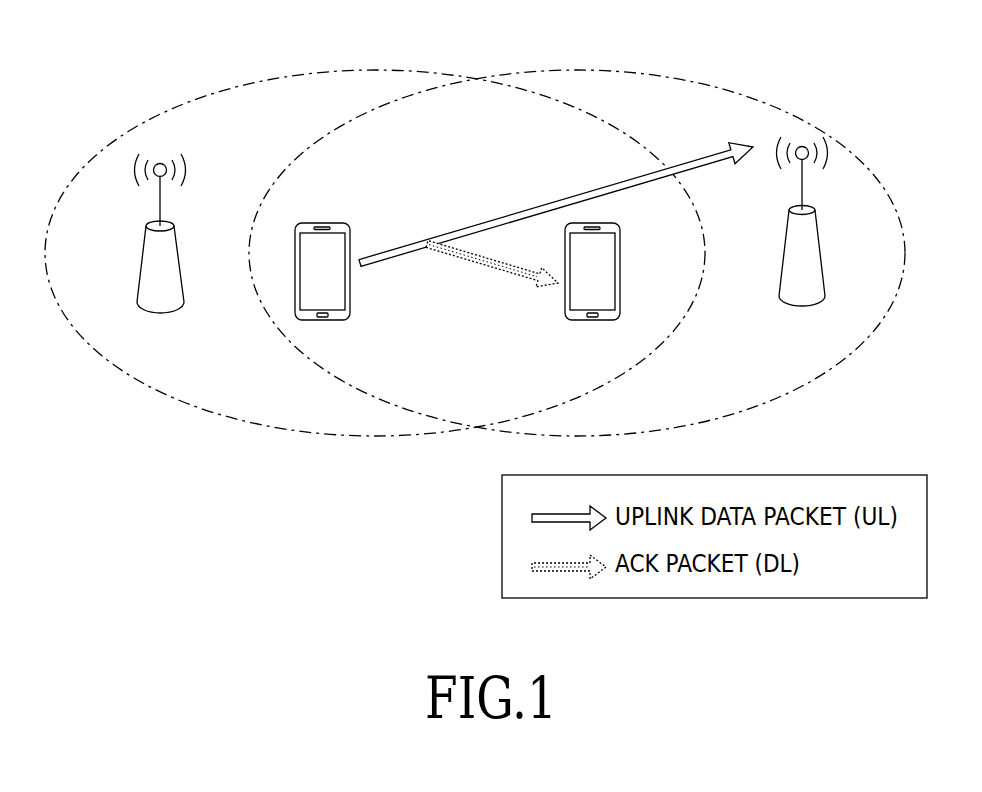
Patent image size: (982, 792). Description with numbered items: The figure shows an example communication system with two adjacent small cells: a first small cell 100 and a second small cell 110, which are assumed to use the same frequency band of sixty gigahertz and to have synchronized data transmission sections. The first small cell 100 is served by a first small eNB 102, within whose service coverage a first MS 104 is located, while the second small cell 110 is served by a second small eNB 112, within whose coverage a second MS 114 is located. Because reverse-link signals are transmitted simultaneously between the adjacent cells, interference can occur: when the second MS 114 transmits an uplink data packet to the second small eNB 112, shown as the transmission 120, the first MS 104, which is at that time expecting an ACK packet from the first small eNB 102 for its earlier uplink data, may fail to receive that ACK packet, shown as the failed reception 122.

The first small cell 100 is at (373, 69).
The second small cell 110 is at (574, 69).
The first small evolved node B (eNB) 102 is at (184, 262).
The second small eNB 112 is at (824, 247).
The second MS 114 is at (322, 222).
The first MS (MS 1) 104 is at (622, 270).
The uplink data packet transmission of the second MS 120 is at (598, 185).
The ACK packet reception failure of the first MS 122 is at (489, 272).